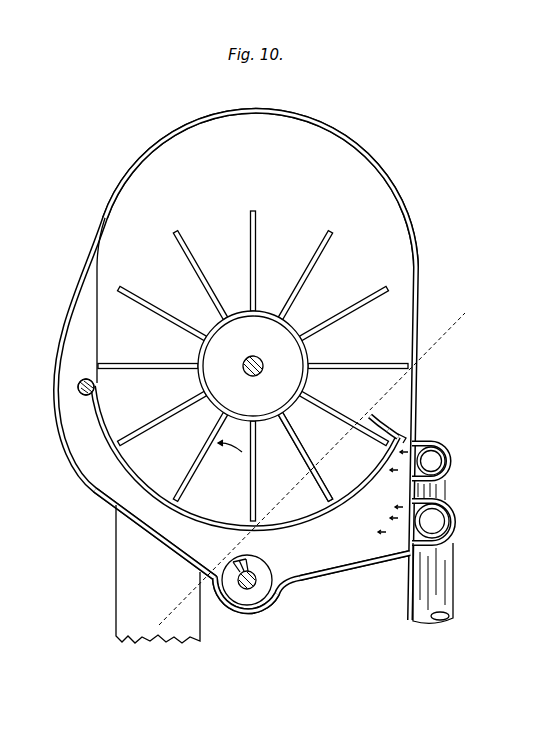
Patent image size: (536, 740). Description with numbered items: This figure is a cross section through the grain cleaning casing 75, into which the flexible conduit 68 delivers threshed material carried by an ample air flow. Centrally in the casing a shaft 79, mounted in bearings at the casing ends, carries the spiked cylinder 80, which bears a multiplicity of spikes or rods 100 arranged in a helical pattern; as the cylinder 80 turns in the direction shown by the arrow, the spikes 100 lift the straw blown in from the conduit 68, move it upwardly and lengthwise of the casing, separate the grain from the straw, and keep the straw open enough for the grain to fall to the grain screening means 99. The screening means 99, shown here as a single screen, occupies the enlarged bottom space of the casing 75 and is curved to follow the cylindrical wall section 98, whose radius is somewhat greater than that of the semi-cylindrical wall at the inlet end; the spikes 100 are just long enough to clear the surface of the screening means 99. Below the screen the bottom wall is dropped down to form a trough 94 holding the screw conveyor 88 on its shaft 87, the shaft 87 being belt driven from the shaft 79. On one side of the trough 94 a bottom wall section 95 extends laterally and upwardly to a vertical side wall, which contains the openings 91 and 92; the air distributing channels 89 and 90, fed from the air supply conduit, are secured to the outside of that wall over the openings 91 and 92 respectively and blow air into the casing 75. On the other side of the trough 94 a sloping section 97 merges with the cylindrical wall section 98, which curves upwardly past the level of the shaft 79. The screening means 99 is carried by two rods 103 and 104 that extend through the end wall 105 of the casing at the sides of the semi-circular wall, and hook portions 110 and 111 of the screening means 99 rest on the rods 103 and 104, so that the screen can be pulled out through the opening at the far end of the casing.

The conduit 68 is at (172, 614).
The grain cleaning casing 75 is at (401, 183).
The shaft 79 is at (252, 357).
The spiked cylinder 80 is at (237, 418).
The shaft 87 is at (253, 577).
The screw conveyor 88 is at (234, 571).
The air distributing channel 89 is at (449, 460).
The air distributing channel 90 is at (455, 522).
The opening 91 is at (407, 462).
The opening 92 is at (408, 498).
The trough 94 is at (247, 613).
The bottom wall section 95 is at (370, 570).
The sloping section 97 is at (171, 548).
The cylindrical wall section 98 is at (58, 453).
The grain screening means 99 is at (267, 511).
The spikes 100 is at (227, 484).
The rod 103 is at (411, 442).
The rod 104 is at (80, 392).
The end wall 105 is at (72, 327).
The hook portion 110 is at (392, 428).
The hook portion 111 is at (96, 378).